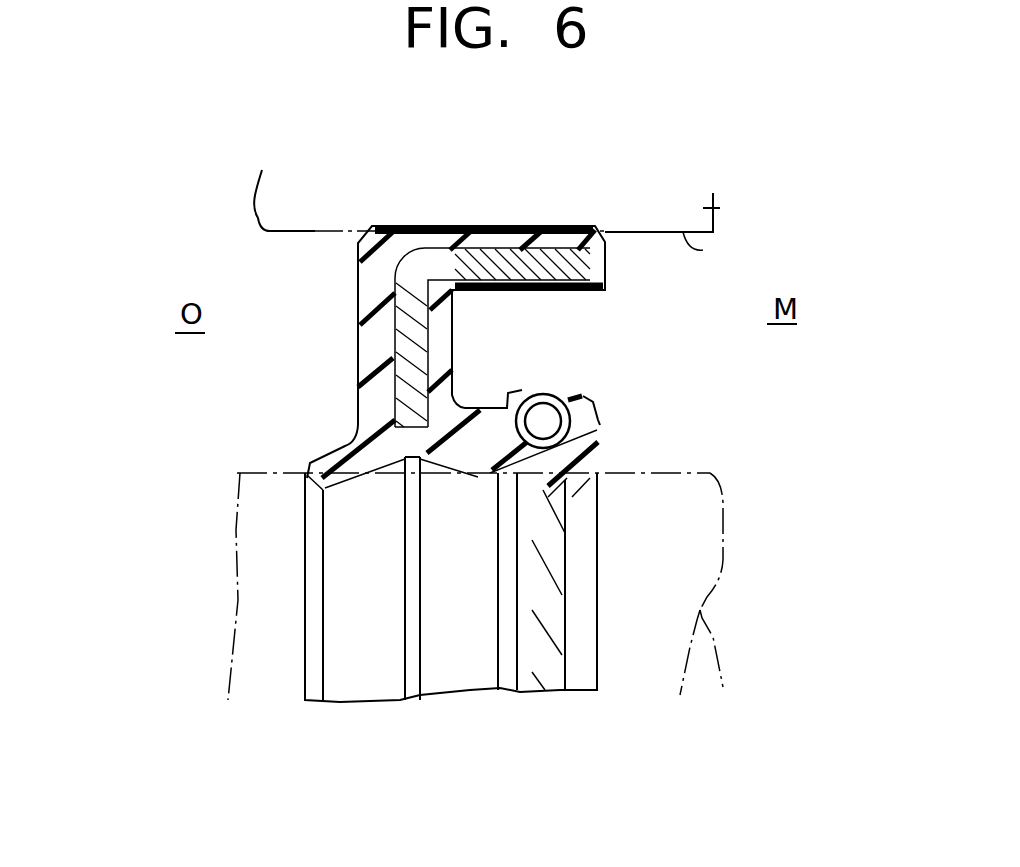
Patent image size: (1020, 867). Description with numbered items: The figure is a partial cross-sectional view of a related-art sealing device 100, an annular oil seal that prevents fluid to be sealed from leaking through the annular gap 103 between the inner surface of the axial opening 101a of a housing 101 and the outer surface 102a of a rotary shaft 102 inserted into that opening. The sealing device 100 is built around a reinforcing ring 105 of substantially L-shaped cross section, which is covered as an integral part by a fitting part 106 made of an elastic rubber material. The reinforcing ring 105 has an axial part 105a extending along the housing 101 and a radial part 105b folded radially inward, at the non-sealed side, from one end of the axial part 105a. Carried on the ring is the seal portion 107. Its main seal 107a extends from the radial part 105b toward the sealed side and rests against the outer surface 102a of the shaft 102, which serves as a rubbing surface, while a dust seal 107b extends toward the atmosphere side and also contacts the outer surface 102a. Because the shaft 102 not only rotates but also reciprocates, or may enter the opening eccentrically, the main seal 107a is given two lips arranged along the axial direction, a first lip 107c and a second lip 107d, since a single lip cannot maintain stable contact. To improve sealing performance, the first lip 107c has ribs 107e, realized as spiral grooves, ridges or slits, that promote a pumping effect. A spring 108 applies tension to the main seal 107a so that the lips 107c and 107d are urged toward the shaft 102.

The sealing device 100 is at (140, 262).
The housing 101 is at (720, 210).
The axial opening 101a is at (705, 250).
The rotary shaft 102 is at (723, 540).
The outer surface 102a is at (704, 472).
The annular gap 103 is at (790, 353).
The reinforcing ring 105 is at (482, 283).
The axial part 105a is at (502, 262).
The radial part 105b is at (369, 307).
The fitting part 106 is at (567, 224).
The seal portion 107 is at (457, 412).
The main seal 107a is at (758, 372).
The dust seal 107b is at (328, 452).
The first lip 107c is at (580, 496).
The second lip 107d is at (597, 430).
The ribs 107e is at (545, 627).
The spring 108 is at (556, 395).